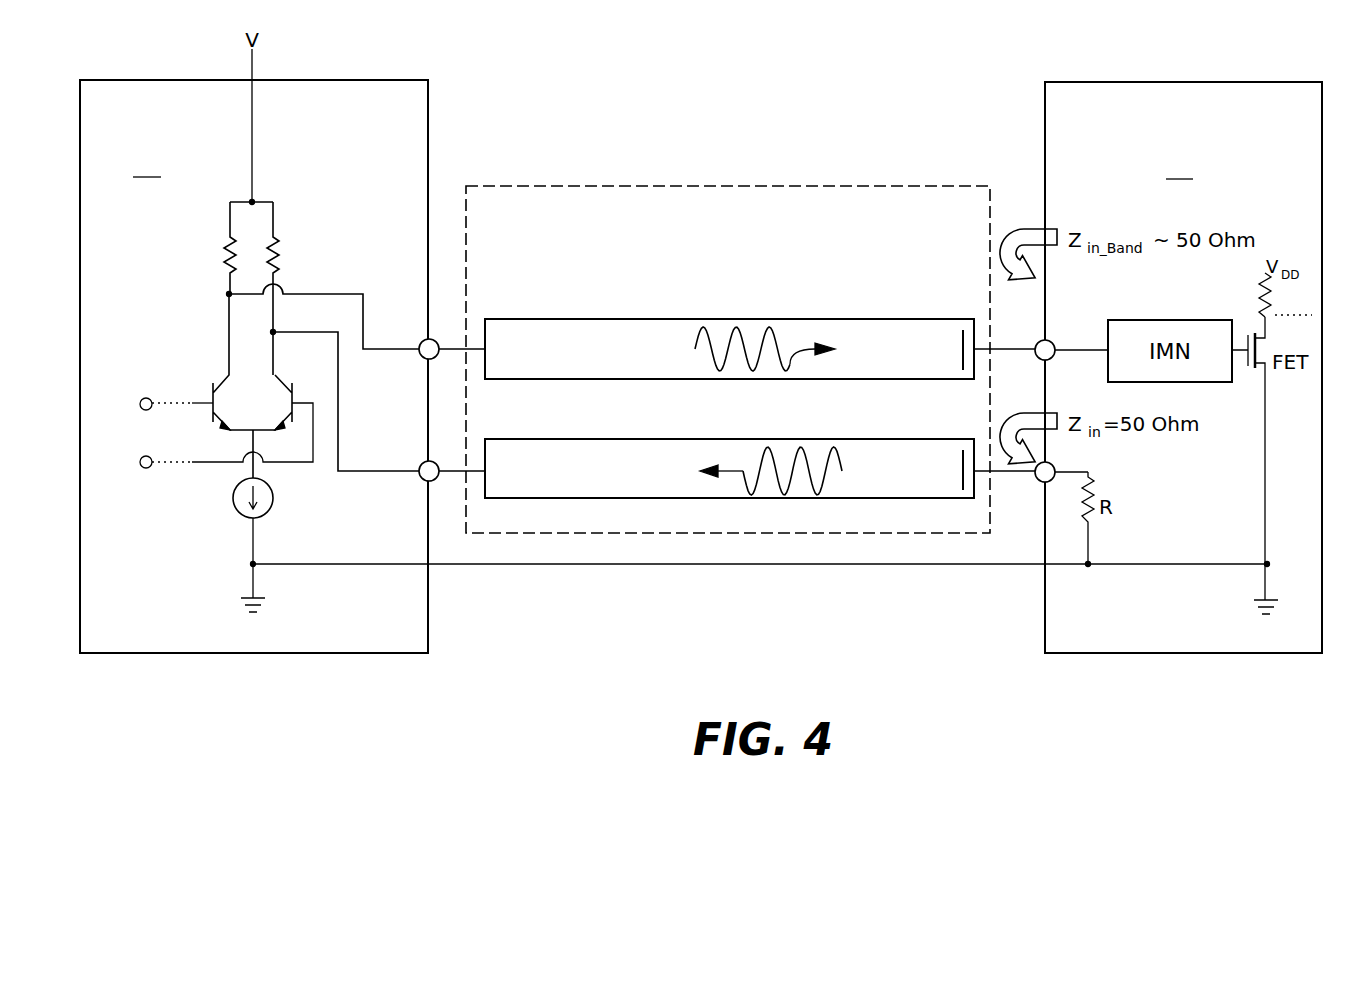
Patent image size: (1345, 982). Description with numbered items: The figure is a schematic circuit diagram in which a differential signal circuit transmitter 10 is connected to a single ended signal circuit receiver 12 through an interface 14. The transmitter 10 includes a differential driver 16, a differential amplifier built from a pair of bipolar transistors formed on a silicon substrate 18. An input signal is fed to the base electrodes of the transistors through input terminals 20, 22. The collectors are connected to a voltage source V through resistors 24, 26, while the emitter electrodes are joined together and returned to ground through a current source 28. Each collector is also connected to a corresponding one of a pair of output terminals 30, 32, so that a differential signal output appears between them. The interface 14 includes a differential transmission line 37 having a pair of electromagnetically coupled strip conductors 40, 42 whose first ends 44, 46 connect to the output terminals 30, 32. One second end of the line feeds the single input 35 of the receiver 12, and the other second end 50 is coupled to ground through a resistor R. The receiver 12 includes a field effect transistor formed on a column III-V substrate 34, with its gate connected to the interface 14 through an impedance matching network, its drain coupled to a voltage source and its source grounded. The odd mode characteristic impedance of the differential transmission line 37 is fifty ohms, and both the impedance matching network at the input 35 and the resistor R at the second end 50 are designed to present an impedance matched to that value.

The differential signal circuit transmitter 10 is at (152, 137).
The single ended signal circuit receiver 12 is at (1180, 138).
The interface 14 is at (772, 150).
The differential driver 16 is at (203, 365).
The silicon substrate 18 is at (349, 655).
The input terminal 20 is at (140, 399).
The input terminal 22 is at (140, 457).
The resistor 24 is at (222, 257).
The resistor 26 is at (283, 257).
The current source 28 is at (233, 500).
The output terminal 30 is at (420, 342).
The output terminal 32 is at (420, 465).
The column III-V substrate 34 is at (1168, 655).
The single input 35 is at (1053, 358).
The differential transmission line 37 is at (922, 219).
The strip conductor 40 is at (565, 319).
The strip conductor 42 is at (565, 439).
The first end 44 is at (497, 343).
The first end 46 is at (497, 465).
The second end 50 is at (960, 465).